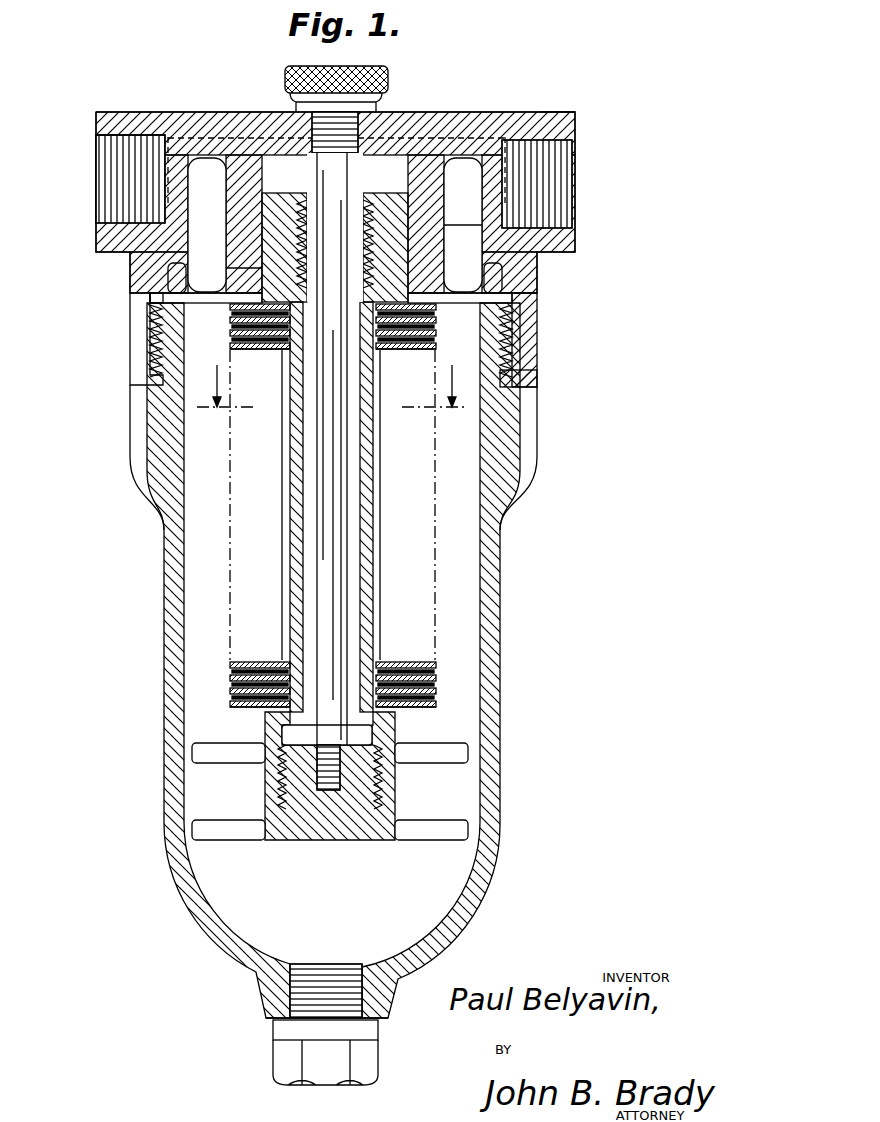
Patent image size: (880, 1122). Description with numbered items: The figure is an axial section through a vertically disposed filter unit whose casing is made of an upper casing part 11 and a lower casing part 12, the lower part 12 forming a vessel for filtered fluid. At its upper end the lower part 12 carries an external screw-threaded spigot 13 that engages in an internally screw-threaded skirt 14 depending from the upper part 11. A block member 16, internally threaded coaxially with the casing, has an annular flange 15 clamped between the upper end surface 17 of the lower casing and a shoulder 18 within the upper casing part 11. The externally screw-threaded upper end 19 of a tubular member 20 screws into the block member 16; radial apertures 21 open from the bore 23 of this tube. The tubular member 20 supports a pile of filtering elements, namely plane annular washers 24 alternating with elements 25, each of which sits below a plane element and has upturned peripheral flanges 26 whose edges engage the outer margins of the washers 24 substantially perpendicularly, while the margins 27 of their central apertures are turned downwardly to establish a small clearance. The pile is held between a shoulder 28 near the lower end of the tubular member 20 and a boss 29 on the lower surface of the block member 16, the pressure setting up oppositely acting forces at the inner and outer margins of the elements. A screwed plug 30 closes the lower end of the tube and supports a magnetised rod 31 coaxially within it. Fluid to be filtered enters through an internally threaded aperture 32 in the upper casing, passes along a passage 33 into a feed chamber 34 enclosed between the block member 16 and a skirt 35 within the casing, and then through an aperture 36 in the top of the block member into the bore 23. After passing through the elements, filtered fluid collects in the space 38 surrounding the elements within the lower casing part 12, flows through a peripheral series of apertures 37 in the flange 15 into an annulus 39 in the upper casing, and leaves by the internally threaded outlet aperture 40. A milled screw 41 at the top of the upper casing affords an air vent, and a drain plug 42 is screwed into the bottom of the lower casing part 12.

The upper casing part 11 is at (562, 128).
The lower casing part 12 is at (490, 618).
The external screw-threaded spigot 13 is at (492, 342).
The internally screw-threaded skirt 14 is at (148, 365).
The annular flange 15 is at (165, 307).
The block member 16 is at (490, 165).
The upper end surface 17 is at (148, 330).
The shoulder 18 is at (185, 290).
The externally screw-threaded upper end 19 is at (465, 185).
The tubular member 20 is at (300, 521).
The radial apertures 21 is at (295, 405).
The bore 23 is at (296, 523).
The plane annular washer elements 24 is at (232, 346).
The flanged filtering elements 25 is at (470, 248).
The upturned peripheral flanges 26 is at (438, 345).
The margins of central apertures 27 is at (263, 745).
The shoulder 28 is at (398, 755).
The boss 29 is at (240, 268).
The screwed plug 30 is at (358, 788).
The magnetised rod 31 is at (330, 440).
The internally screw-threaded aperture 32 is at (535, 185).
The passage 33 is at (545, 130).
The feed chamber 34 is at (247, 172).
The skirt 35 is at (160, 135).
The aperture 36 is at (313, 203).
The peripheral apertures 37 is at (165, 297).
The space 38 is at (203, 492).
The annulus 39 is at (205, 165).
The outlet aperture 40 is at (120, 178).
The milled screw 41 is at (388, 78).
The drain plug 42 is at (345, 1055).